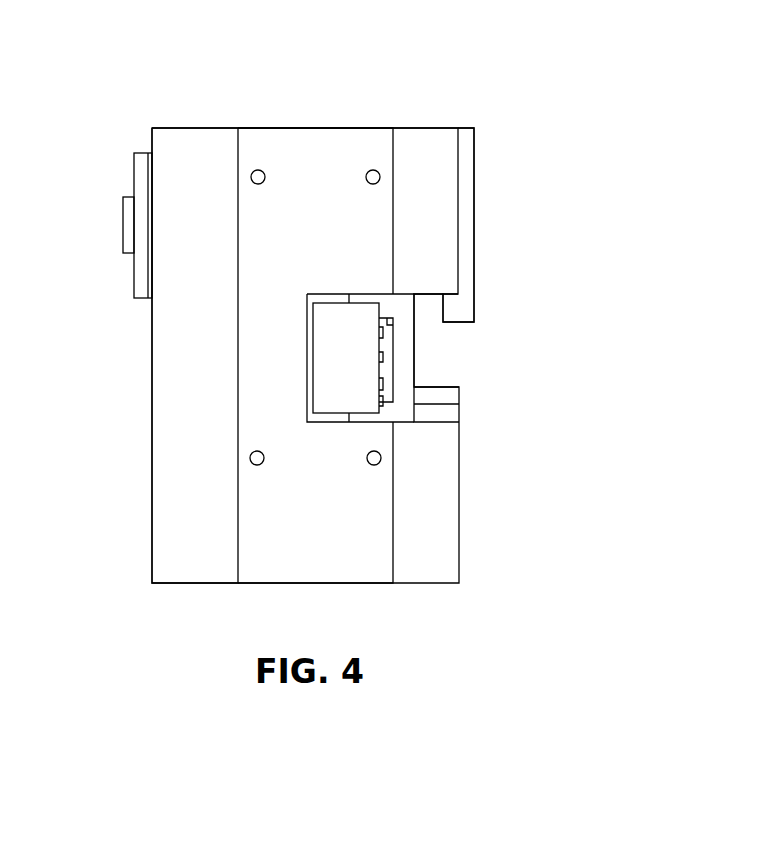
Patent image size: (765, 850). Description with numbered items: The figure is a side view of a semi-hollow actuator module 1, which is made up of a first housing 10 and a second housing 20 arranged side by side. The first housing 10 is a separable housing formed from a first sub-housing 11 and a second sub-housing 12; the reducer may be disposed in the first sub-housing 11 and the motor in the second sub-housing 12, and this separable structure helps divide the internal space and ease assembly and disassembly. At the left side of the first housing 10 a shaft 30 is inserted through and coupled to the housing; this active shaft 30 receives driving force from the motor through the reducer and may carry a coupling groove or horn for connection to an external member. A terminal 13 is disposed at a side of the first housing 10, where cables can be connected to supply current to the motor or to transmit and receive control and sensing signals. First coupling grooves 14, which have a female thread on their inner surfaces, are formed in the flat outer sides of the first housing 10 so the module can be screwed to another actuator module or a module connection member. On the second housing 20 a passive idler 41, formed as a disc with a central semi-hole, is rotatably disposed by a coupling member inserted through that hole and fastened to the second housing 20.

The semi-hollow actuator module 1 is at (511, 86).
The first housing 10 is at (205, 70).
The first sub-housing 11 is at (214, 140).
The second sub-housing 12 is at (279, 140).
The terminal 13 is at (310, 366).
The first coupling groove 14 is at (250, 457).
The second housing 20 is at (424, 140).
The shaft 30 is at (140, 225).
The idler 41 is at (475, 207).